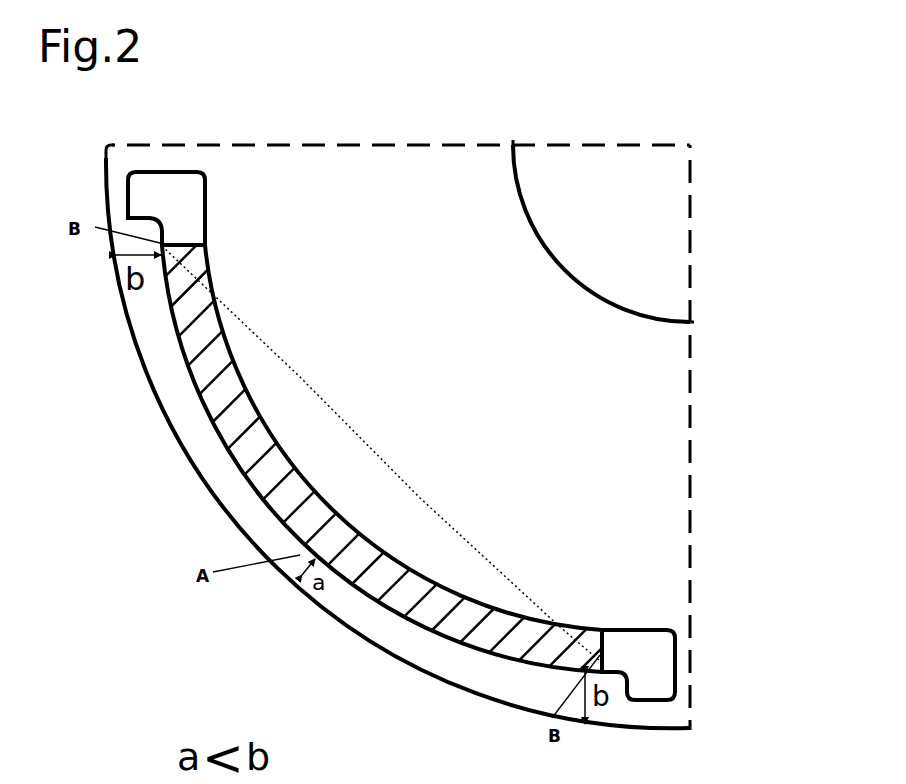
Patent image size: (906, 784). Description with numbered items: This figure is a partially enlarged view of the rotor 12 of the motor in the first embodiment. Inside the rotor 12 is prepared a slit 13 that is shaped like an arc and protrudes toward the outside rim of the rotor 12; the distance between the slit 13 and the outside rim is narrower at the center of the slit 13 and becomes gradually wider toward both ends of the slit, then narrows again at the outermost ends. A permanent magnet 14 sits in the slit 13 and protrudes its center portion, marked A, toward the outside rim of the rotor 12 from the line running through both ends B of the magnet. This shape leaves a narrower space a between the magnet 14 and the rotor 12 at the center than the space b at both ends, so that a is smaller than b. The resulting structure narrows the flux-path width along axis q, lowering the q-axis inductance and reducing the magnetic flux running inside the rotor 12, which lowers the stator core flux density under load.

The rotor 12 is at (648, 517).
The slit 13 is at (655, 665).
The permanent magnet 14 is at (470, 640).